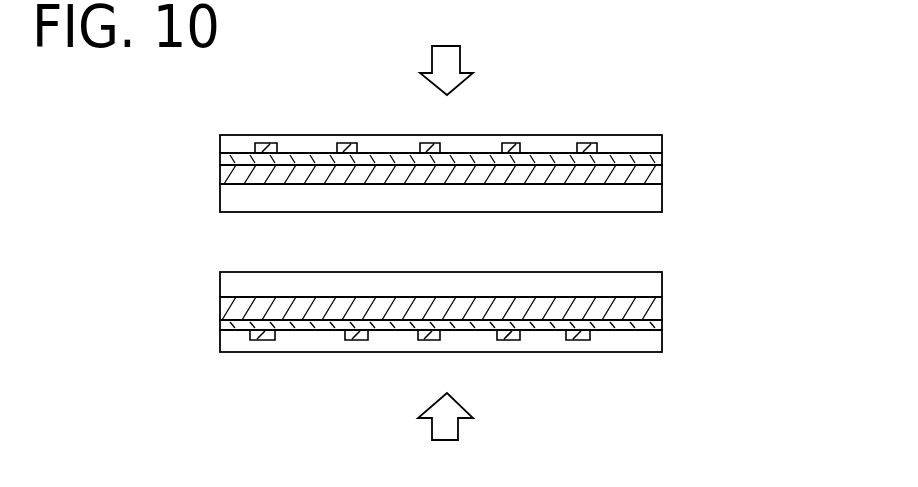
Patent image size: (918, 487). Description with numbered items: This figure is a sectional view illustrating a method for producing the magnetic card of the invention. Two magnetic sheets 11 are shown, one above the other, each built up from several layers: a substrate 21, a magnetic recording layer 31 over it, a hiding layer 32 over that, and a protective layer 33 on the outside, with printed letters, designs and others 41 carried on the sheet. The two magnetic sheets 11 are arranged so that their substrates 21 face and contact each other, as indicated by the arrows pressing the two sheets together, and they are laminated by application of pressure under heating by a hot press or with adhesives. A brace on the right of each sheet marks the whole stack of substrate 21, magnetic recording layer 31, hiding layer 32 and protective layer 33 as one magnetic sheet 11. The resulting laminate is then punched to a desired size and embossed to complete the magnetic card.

The magnetic sheet 11 is at (795, 85).
The substrate 21 is at (662, 197).
The magnetic recording layer 31 is at (662, 172).
The hiding layer 32 is at (662, 158).
The protective layer 33 is at (662, 145).
The printed letters, designs and others 41 is at (582, 135).